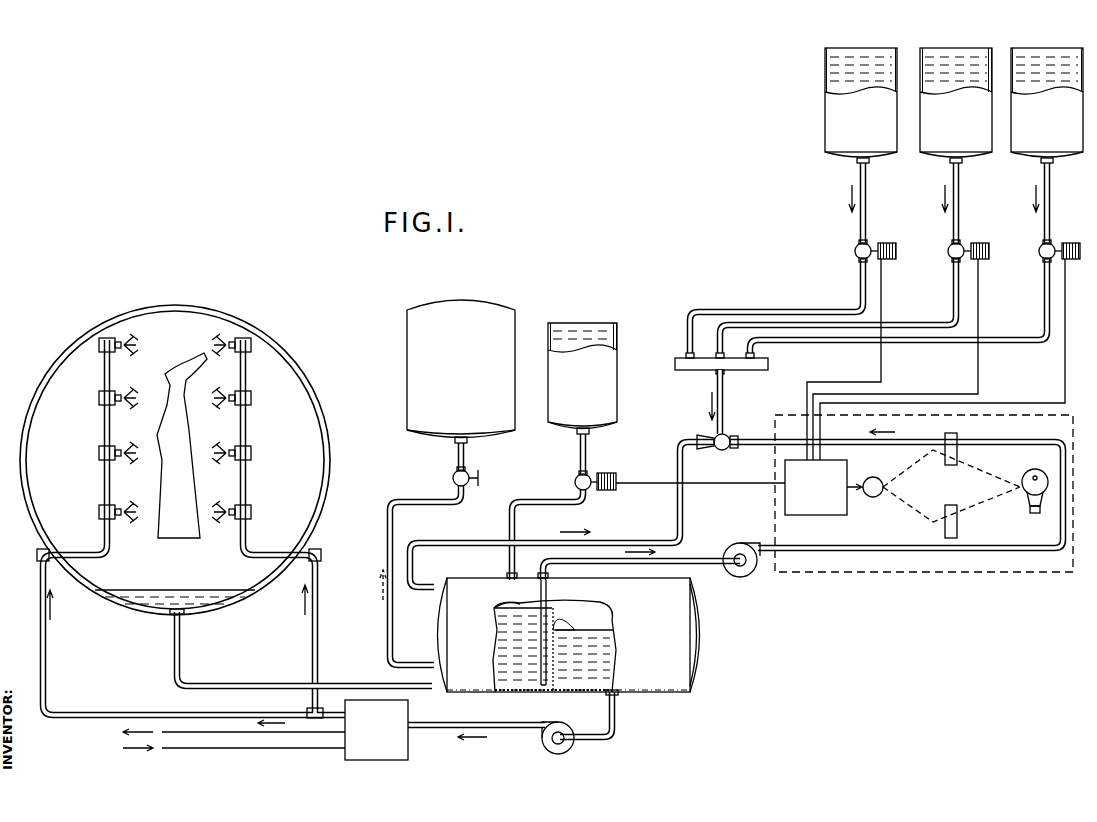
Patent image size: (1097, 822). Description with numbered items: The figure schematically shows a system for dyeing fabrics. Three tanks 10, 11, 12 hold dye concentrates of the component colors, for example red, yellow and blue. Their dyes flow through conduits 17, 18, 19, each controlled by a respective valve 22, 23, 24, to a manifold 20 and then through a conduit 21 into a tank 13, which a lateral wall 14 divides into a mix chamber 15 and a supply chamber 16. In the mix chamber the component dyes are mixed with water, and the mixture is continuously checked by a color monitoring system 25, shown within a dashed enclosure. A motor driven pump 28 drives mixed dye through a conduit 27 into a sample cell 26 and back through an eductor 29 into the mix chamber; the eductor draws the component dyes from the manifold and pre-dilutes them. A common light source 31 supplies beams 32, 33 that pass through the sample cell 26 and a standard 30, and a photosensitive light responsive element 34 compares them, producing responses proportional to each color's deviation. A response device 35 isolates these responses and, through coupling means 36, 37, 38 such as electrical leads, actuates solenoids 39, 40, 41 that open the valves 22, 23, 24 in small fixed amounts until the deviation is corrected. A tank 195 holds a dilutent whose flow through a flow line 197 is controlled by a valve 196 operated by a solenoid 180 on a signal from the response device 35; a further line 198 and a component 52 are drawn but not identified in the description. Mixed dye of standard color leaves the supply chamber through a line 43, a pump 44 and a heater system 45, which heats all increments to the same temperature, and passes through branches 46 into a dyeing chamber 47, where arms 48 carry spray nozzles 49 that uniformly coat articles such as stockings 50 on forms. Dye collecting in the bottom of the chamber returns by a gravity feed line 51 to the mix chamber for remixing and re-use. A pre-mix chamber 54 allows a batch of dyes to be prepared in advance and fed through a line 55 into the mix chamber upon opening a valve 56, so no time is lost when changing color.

The tank 10 is at (861, 145).
The tank 11 is at (956, 145).
The tank 12 is at (1047, 145).
The tank 13 is at (569, 632).
The lateral wall 14 is at (556, 640).
The mix chamber 15 is at (498, 610).
The supply chamber 16 is at (603, 622).
The conduit 17 is at (786, 306).
The conduit 18 is at (952, 300).
The conduit 19 is at (1044, 300).
The manifold 20 is at (675, 363).
The conduit 21 is at (624, 541).
The valve 22 is at (855, 251).
The valve 23 is at (948, 251).
The valve 24 is at (1039, 251).
The color monitoring system 25 is at (915, 572).
The sample cell 26 is at (947, 468).
The conduit 27 is at (838, 450).
The motor driven pump 28 is at (746, 575).
The eductor 29 is at (730, 436).
The standard 30 is at (945, 527).
The light source 31 is at (1036, 470).
The beam 32 is at (1000, 480).
The beam 33 is at (1005, 497).
The photosensitive light responsive element 34 is at (876, 477).
The response device 35 is at (816, 487).
The coupling means 36 is at (880, 376).
The coupling means 37 is at (976, 376).
The coupling means 38 is at (1063, 380).
The solenoid 39 is at (887, 243).
The solenoid 40 is at (980, 243).
The solenoid 41 is at (1071, 243).
The line 43 is at (618, 726).
The pump 44 is at (562, 731).
The heater system 45 is at (334, 730).
The branches 46 is at (318, 625).
The dyeing chamber 47 is at (292, 356).
The arms 48 is at (102, 435).
The spray nozzles 49 is at (116, 392).
The stockings 50 is at (182, 445).
The gravity feed line 51 is at (186, 676).
The screen 52 is at (525, 685).
The pre-mix chamber 54 is at (461, 385).
The line 55 is at (416, 500).
The valve 56 is at (468, 473).
The solenoid 180 is at (609, 473).
The tank 195 is at (582, 398).
The valve 196 is at (575, 483).
The flow line 197 is at (510, 527).
The wire 198 is at (745, 485).